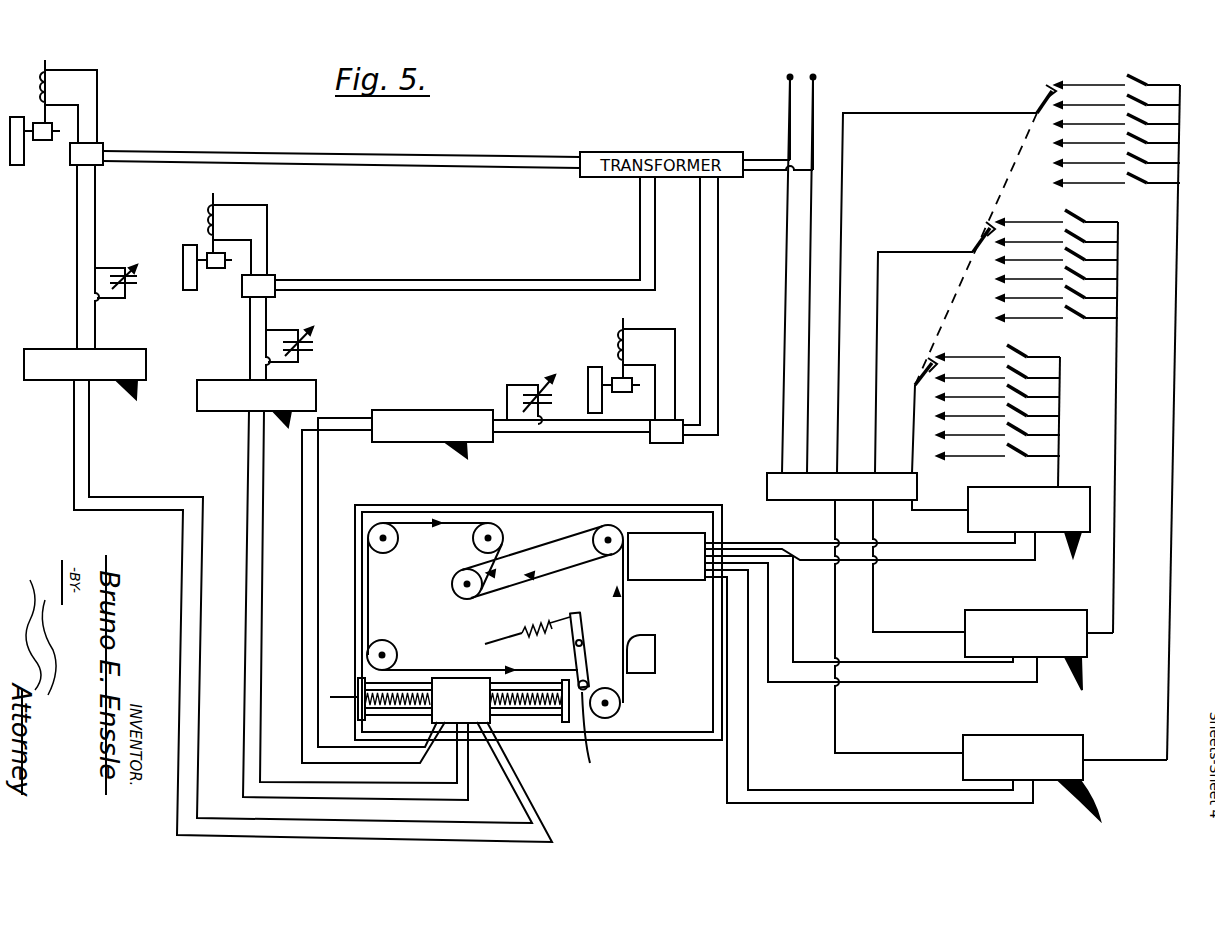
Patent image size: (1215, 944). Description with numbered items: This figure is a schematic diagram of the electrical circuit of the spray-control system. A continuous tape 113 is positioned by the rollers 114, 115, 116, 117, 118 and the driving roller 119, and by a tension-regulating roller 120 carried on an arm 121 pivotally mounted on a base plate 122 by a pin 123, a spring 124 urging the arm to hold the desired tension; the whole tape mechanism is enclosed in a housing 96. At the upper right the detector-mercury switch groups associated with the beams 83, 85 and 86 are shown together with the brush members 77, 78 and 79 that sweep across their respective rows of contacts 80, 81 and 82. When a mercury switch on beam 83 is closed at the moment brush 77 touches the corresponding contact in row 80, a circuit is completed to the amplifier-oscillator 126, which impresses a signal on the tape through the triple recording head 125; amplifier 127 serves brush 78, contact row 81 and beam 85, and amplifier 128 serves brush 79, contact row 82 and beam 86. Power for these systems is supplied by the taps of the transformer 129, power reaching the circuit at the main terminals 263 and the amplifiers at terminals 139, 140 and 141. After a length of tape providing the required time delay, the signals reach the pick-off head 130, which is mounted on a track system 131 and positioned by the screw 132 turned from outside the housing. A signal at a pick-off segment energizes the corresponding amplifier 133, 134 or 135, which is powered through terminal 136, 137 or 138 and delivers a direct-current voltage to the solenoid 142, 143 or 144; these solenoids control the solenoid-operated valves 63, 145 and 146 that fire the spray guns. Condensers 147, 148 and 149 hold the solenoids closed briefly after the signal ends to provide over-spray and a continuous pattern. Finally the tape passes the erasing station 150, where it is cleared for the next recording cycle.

The solenoid-operated valve 63 is at (26, 147).
The solenoid 142 is at (104, 144).
The condenser 147 is at (113, 268).
The amplifier 133 is at (345, 695).
The terminal 136 is at (134, 402).
The solenoid-operated valve 145 is at (200, 268).
The solenoid 143 is at (268, 278).
The condenser 148 is at (310, 338).
The amplifier 134 is at (228, 403).
The terminal 137 is at (285, 433).
The condenser 149 is at (525, 385).
The amplifier 135 is at (405, 440).
The terminal 138 is at (465, 462).
The solenoid-operated valve 146 is at (612, 380).
The solenoid 144 is at (665, 442).
The main terminals 263 is at (790, 77).
The contact brush member 77 is at (1032, 112).
The row of contacts 80 is at (1108, 103).
The beam 83 is at (1178, 168).
The contact brush member 78 is at (972, 246).
The row of contacts 81 is at (1045, 240).
The beam 85 is at (1118, 308).
The contact brush member 79 is at (915, 385).
The row of contacts 82 is at (992, 375).
The beam 86 is at (1060, 428).
The transformer 129 is at (767, 480).
The amplifier-oscillator 128 is at (1005, 487).
The terminal 141 is at (1075, 560).
The amplifier-oscillator 127 is at (1000, 612).
The terminal 140 is at (1091, 682).
The amplifier-oscillator 126 is at (985, 735).
The terminal 139 is at (1096, 807).
The housing 96 is at (565, 505).
The recording head 125 is at (655, 580).
The roller 115 is at (386, 524).
The roller 116 is at (497, 531).
The roller 118 is at (597, 550).
The roller 117 is at (455, 589).
The roller 114 is at (392, 650).
The driving roller 119 is at (622, 705).
The continuous tape 113 is at (372, 567).
The base plate 122 is at (576, 597).
The arm 121 is at (588, 632).
The pin 123 is at (576, 648).
The spring 124 is at (535, 626).
The erasing station 150 is at (657, 653).
The pick-off head 130 is at (470, 678).
The track system 131 is at (533, 718).
The screw 132 is at (390, 693).
The roller 120 is at (601, 742).